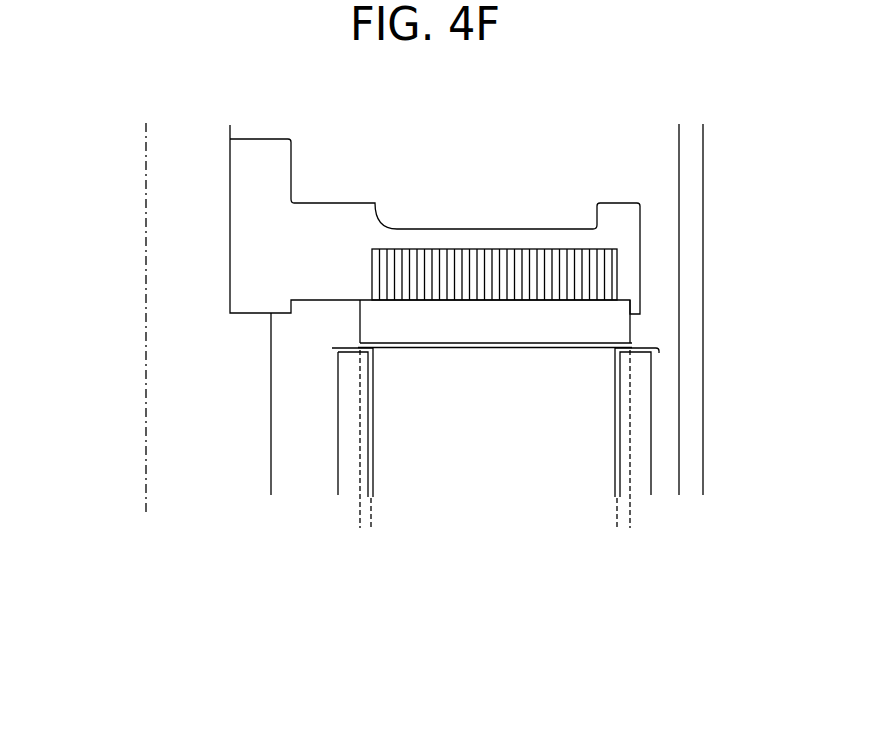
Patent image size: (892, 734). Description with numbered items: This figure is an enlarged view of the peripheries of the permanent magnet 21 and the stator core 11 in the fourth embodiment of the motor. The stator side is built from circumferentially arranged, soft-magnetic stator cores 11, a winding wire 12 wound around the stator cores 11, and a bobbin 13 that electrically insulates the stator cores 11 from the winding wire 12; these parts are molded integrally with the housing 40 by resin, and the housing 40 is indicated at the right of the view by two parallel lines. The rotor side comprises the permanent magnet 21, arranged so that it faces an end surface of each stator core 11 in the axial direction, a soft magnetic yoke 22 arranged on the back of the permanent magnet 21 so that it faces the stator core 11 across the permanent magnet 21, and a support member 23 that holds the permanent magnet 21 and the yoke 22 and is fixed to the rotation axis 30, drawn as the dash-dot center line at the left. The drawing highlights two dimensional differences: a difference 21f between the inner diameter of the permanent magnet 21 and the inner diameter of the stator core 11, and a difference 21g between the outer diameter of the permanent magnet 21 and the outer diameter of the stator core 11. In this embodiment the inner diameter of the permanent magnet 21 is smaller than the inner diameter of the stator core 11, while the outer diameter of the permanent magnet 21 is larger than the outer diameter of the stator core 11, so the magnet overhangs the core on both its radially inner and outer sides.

The stator core 11 is at (385, 462).
The winding wire 12 is at (642, 395).
The bobbin 13 is at (368, 415).
The permanent magnet 21 is at (540, 307).
The yoke 22 is at (457, 257).
The support member 23 is at (333, 220).
The rotation axis 30 is at (143, 280).
The housing 40 is at (692, 195).
The difference between inner diameter of permanent magnet and inner diameter of stat 21f is at (338, 515).
The difference between outer diameter of permanent magnet and outer diameter of stat 21g is at (593, 515).